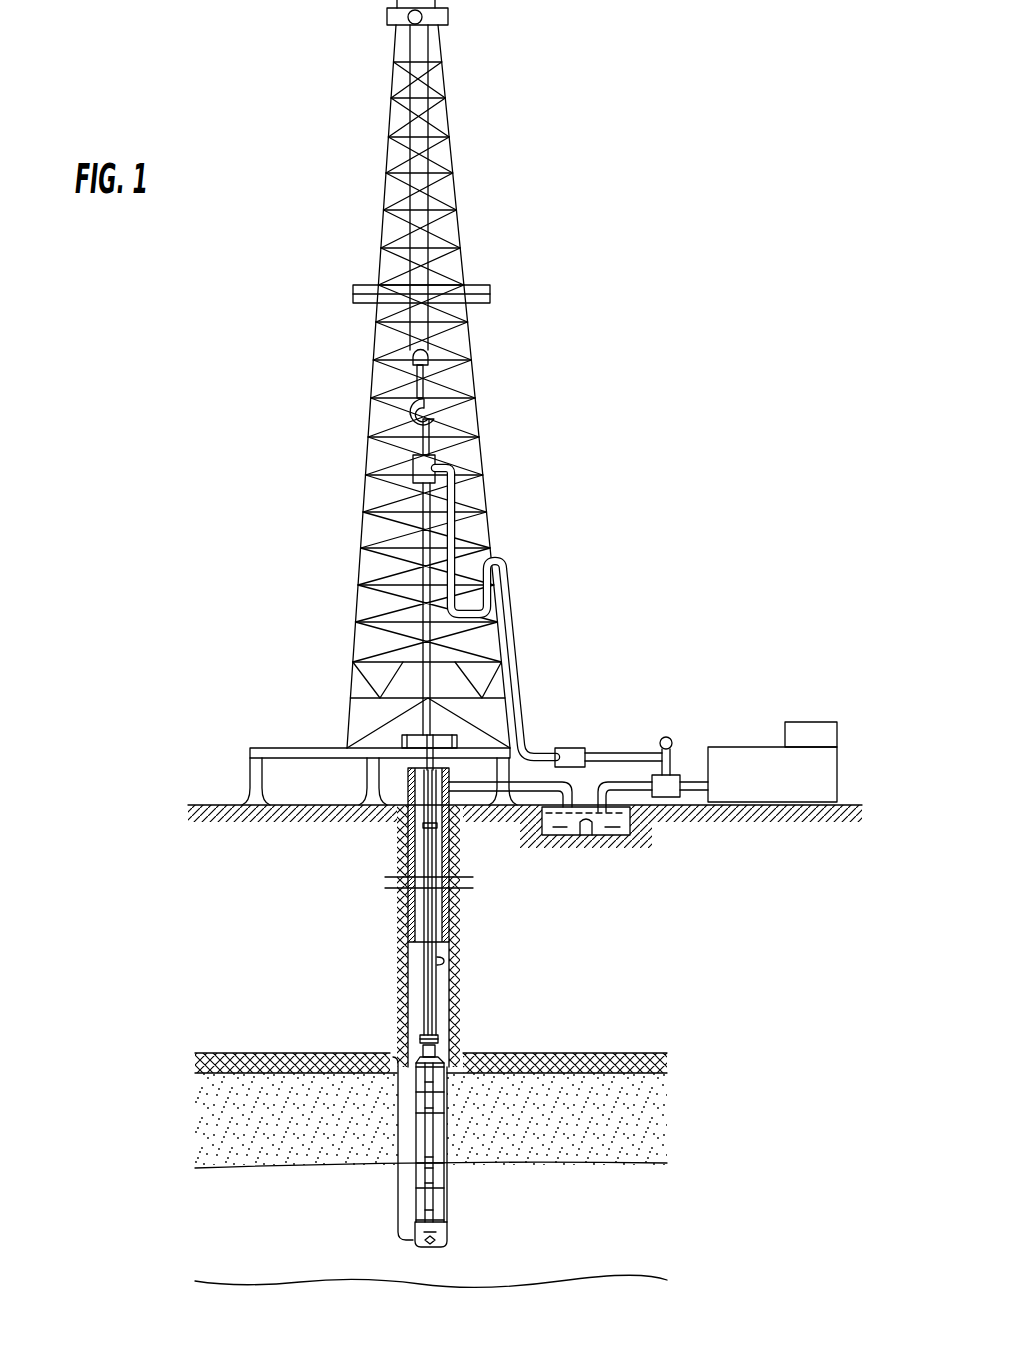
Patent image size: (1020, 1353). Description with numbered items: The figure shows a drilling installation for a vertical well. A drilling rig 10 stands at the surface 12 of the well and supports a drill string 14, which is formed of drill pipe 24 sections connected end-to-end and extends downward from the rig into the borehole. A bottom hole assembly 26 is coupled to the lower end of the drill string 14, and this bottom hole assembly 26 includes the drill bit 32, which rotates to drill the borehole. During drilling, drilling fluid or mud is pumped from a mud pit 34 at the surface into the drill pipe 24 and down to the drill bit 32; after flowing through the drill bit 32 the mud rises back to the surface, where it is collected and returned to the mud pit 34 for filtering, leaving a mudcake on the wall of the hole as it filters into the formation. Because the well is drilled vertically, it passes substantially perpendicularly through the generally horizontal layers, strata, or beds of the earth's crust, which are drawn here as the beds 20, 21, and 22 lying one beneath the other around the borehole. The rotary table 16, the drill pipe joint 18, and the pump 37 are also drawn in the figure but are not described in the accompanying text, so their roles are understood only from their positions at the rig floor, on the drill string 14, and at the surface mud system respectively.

The drilling rig 10 is at (600, 378).
The surface 12 is at (197, 805).
The drill string 14 is at (442, 992).
The rotary table 16 is at (405, 738).
The drill pipe joint 18 is at (445, 962).
The bed 20 is at (667, 982).
The bed 21 is at (633, 1136).
The bed 22 is at (432, 643).
The drill pipe 24 is at (402, 849).
The bottom hole assembly 26 is at (393, 1137).
The drill bit 32 is at (447, 1238).
The mud pit 34 is at (569, 838).
The mud pump 37 is at (615, 752).